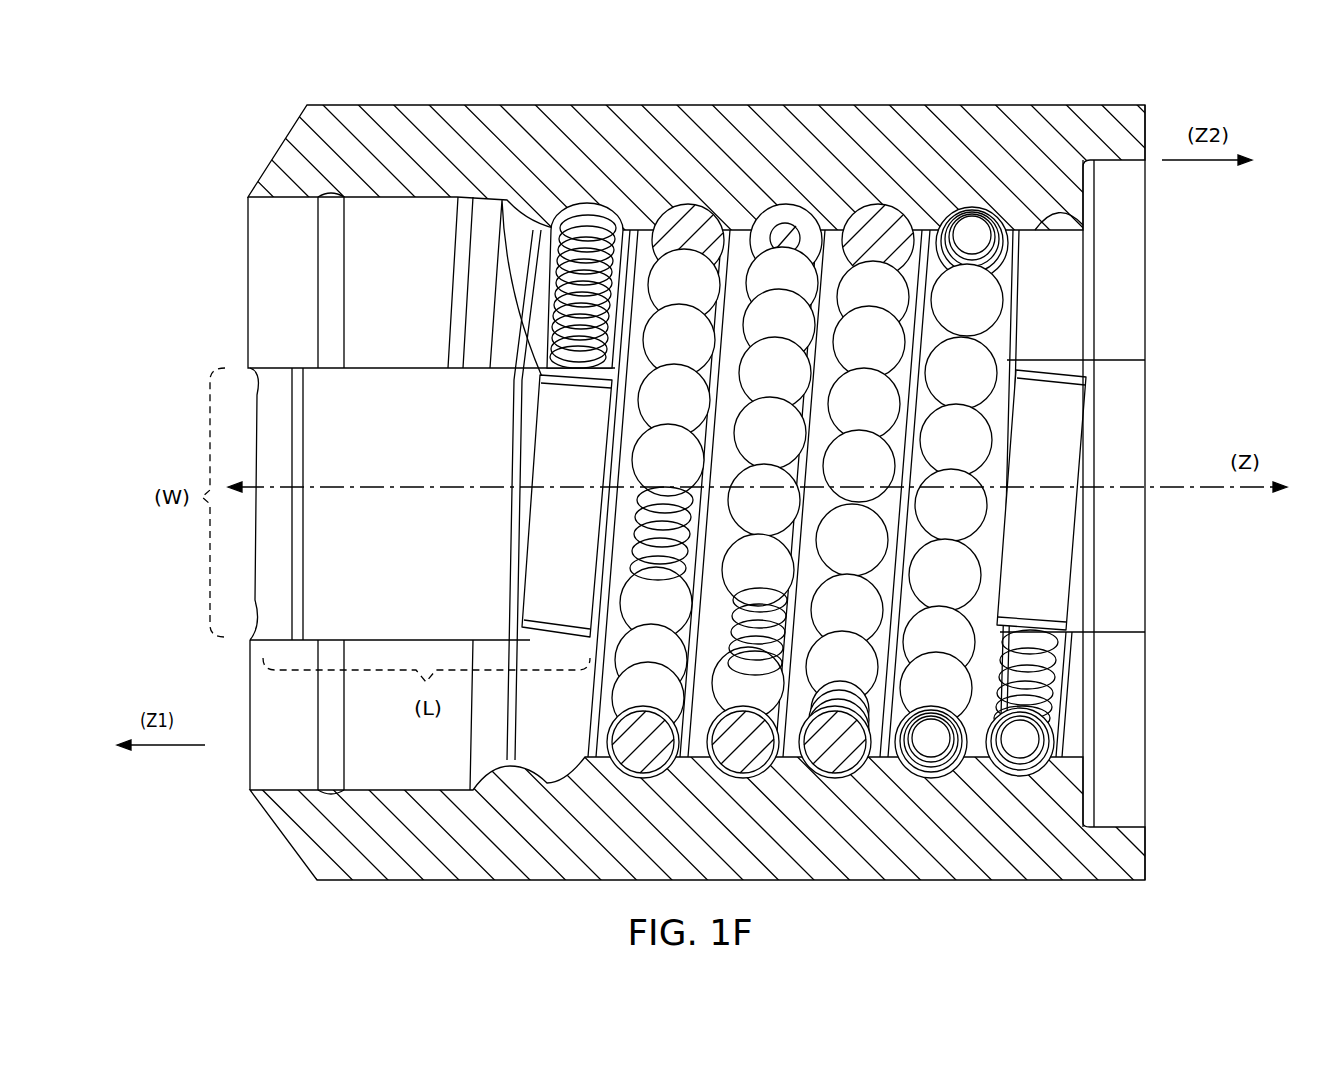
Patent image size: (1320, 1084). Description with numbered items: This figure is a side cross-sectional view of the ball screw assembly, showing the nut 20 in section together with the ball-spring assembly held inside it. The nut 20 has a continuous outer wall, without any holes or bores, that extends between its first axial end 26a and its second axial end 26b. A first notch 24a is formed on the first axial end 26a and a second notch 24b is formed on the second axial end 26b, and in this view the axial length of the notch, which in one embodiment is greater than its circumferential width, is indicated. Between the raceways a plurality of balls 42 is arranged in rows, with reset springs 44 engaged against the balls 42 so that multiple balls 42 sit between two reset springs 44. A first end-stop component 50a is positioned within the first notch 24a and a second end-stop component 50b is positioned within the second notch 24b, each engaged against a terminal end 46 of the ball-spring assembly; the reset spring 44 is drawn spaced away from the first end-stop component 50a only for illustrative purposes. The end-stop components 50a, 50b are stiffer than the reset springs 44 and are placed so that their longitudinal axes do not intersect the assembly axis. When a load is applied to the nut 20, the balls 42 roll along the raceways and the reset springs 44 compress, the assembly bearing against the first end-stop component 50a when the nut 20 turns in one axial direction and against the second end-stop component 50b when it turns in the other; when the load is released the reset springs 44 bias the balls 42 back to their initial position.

The nut 20 is at (283, 136).
The first notch 24a is at (323, 399).
The second notch 24b is at (1145, 445).
The first axial end 26a is at (250, 683).
The second axial end 26b is at (1145, 583).
The balls 42 is at (883, 335).
The reset spring 44 is at (688, 235).
The terminal end 46 is at (500, 200).
The first end-stop component 50a is at (560, 398).
The second end-stop component 50b is at (1070, 393).